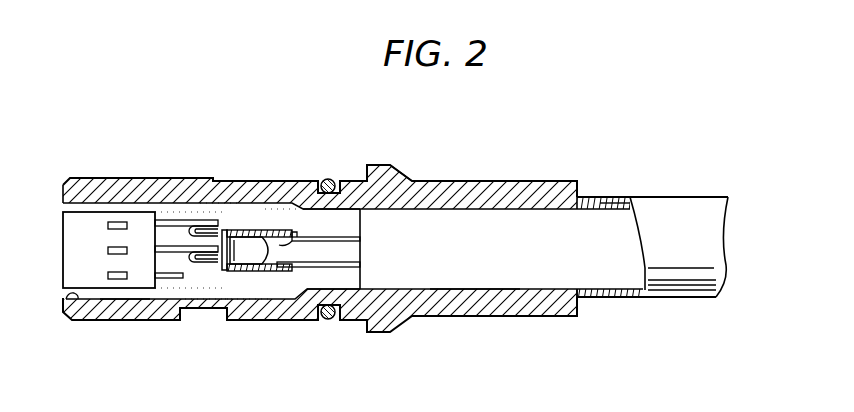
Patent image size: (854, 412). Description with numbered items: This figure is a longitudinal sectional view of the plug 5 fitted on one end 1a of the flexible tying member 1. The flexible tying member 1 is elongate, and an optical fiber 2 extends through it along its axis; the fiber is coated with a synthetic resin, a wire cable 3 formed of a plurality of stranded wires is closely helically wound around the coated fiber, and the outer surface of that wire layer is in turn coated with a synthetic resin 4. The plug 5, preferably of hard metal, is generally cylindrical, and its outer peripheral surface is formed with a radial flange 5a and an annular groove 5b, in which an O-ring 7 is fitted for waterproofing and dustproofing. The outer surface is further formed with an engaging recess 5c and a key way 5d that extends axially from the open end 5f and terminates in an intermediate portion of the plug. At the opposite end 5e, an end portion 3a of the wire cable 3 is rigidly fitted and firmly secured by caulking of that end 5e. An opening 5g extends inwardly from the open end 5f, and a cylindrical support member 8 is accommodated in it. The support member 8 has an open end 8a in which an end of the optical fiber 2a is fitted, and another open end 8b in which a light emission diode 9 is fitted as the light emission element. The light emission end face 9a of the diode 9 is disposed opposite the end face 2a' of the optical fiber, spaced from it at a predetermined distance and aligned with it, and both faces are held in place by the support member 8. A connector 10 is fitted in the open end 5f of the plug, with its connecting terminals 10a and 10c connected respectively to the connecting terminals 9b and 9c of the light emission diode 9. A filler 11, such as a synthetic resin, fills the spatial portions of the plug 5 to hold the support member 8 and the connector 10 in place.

The flexible tying member 1 is at (692, 194).
The end of flexible tying member 1a is at (593, 196).
The optical fiber 2 is at (344, 254).
The optical fiber 2a is at (331, 297).
The end face of optical fiber 2a' is at (318, 308).
The wire cable 3 is at (615, 227).
The end portion of wire cable 3a is at (473, 276).
The synthetic resin 4 is at (620, 298).
The plug 5 is at (492, 182).
The radial flange 5a is at (400, 174).
The annular groove 5b is at (353, 170).
The engaging recess 5c is at (189, 312).
The key way 5d is at (122, 178).
The opposite end of plug 5e is at (563, 282).
The open end of plug 5f is at (72, 300).
The opening 5g is at (127, 294).
The O-ring 7 is at (333, 180).
The support member 8 is at (258, 270).
The open end of support member 8a is at (290, 243).
The open end of support member 8b is at (238, 232).
The light emission diode 9 is at (249, 243).
The light emission end face 9a is at (278, 233).
The connecting terminal of light emission diode 9b is at (216, 231).
The connecting terminal of light emission diode 9c is at (205, 268).
The connector 10 is at (87, 225).
The connecting terminal of connector 10a is at (205, 222).
The connecting terminal of connector 10c is at (176, 223).
The filler 11 is at (240, 293).